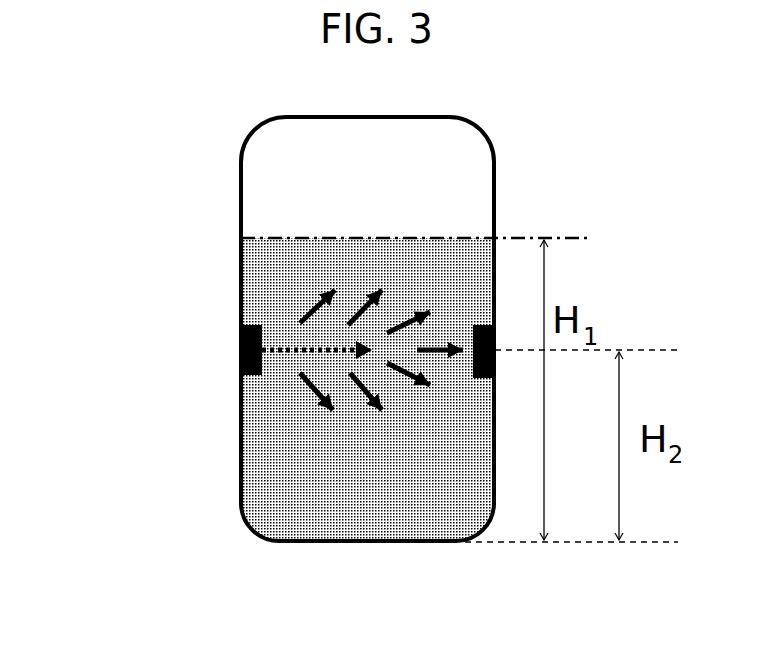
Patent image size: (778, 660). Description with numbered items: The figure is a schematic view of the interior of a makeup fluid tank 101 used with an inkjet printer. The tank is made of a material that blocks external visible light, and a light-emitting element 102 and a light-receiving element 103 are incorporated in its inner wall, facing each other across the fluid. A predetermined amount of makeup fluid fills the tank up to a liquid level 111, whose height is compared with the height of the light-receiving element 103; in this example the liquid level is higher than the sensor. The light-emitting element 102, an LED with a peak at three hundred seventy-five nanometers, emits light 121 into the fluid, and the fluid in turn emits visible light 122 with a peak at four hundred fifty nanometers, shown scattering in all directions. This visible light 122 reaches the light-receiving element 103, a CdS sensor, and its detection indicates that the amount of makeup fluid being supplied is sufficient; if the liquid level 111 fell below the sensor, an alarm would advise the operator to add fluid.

The makeup fluid tank 101 is at (239, 208).
The liquid level 111 is at (448, 238).
The light-emitting element 102 is at (260, 323).
The light-receiving element 103 is at (475, 325).
The light 121 is at (305, 350).
The visible light 122 is at (448, 355).